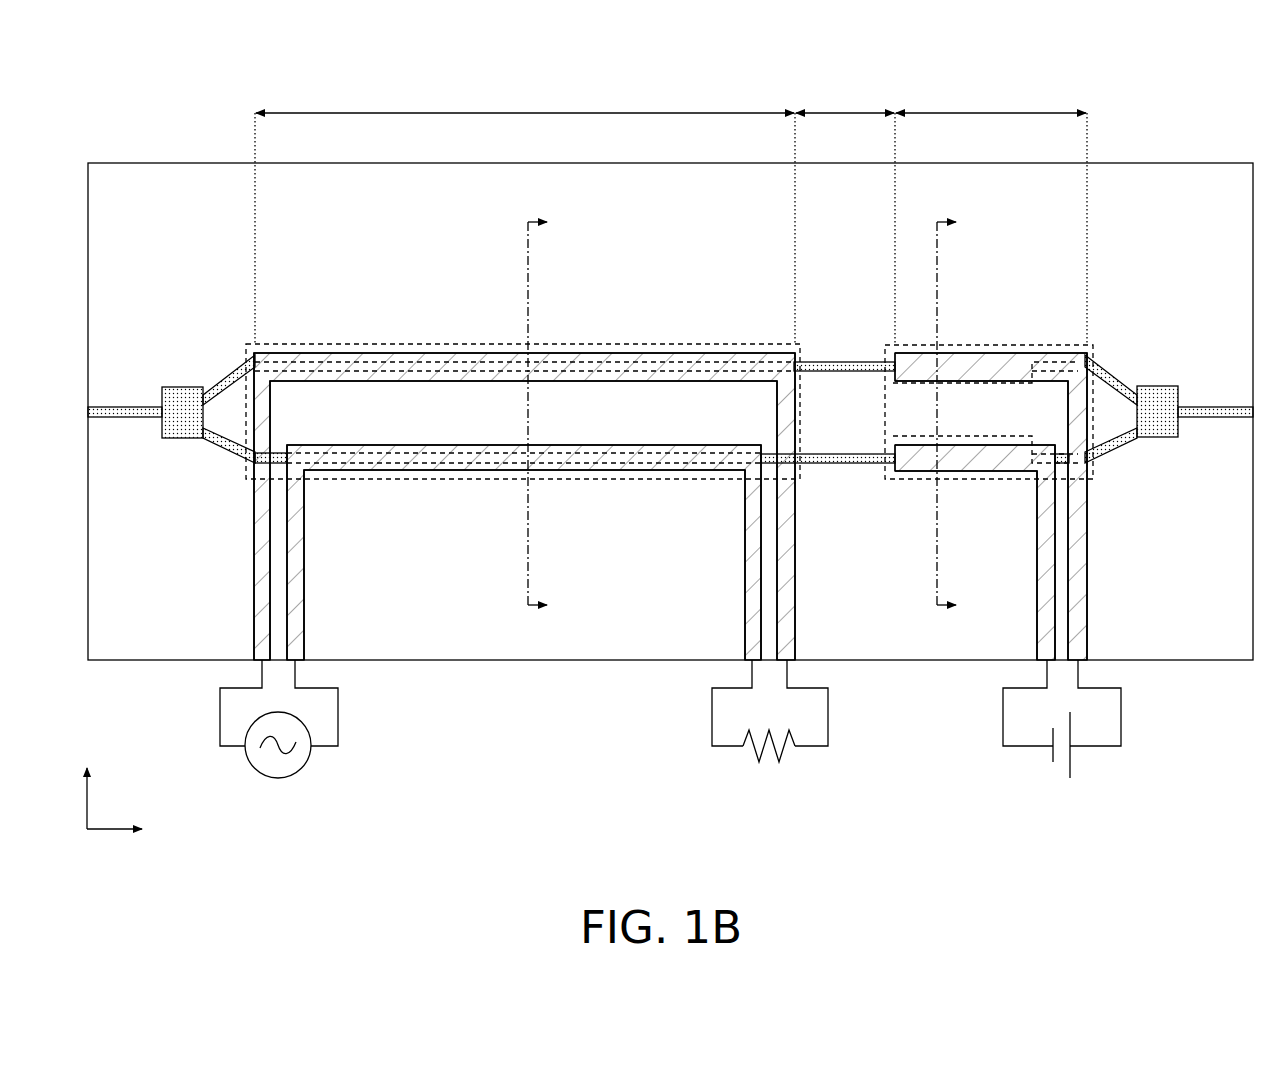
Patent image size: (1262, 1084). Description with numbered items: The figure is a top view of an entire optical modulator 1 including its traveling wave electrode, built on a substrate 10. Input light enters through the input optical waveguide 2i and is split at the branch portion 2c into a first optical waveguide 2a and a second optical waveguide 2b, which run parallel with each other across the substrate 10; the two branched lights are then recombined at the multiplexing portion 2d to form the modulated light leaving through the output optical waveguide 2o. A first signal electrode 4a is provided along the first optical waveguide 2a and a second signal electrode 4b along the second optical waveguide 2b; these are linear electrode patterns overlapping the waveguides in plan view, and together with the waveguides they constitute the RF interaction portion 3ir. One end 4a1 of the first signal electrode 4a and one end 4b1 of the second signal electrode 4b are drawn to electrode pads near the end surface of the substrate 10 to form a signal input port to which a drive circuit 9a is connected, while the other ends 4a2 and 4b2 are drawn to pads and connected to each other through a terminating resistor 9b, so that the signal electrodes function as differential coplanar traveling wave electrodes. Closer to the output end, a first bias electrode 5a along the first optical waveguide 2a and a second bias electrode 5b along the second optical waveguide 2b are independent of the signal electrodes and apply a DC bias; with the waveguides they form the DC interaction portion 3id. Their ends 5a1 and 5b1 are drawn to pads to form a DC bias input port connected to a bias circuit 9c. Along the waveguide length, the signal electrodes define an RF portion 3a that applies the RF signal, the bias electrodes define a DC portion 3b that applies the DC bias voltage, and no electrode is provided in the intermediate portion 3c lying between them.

The optical modulator 1 is at (1179, 56).
The substrate 10 is at (172, 163).
The input optical waveguide 2i is at (118, 422).
The output optical waveguide 2o is at (1213, 420).
The branch portion 2c is at (180, 440).
The multiplexing portion 2d is at (1157, 440).
The first optical waveguide 2a is at (373, 360).
The second optical waveguide 2b is at (443, 455).
The RF portion 3a is at (525, 213).
The DC portion 3b is at (991, 213).
The intermediate portion 3c is at (845, 213).
The RF interaction portion 3ir is at (316, 348).
The DC interaction portion 3id is at (1040, 348).
The first signal electrode 4a is at (514, 460).
The second signal electrode 4b is at (524, 458).
The end of the first signal electrode 4a1 is at (262, 655).
The end of the second signal electrode 4b1 is at (302, 655).
The other end of the first signal electrode 4a2 is at (793, 655).
The other end of the second signal electrode 4b2 is at (752, 655).
The first bias electrode 5a is at (1026, 460).
The second bias electrode 5b is at (975, 579).
The end of the first bias electrode 5a1 is at (1078, 645).
The end of the second bias electrode 5b1 is at (1035, 645).
The drive circuit 9a is at (310, 752).
The termination resistor 9b is at (797, 752).
The bias circuit 9c is at (1075, 762).